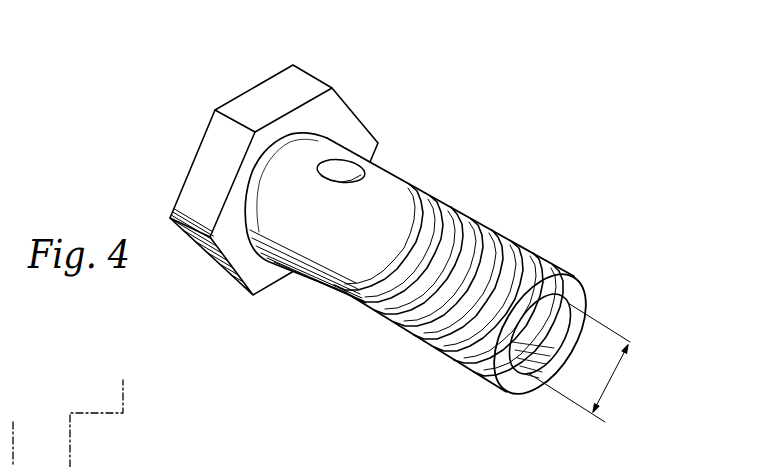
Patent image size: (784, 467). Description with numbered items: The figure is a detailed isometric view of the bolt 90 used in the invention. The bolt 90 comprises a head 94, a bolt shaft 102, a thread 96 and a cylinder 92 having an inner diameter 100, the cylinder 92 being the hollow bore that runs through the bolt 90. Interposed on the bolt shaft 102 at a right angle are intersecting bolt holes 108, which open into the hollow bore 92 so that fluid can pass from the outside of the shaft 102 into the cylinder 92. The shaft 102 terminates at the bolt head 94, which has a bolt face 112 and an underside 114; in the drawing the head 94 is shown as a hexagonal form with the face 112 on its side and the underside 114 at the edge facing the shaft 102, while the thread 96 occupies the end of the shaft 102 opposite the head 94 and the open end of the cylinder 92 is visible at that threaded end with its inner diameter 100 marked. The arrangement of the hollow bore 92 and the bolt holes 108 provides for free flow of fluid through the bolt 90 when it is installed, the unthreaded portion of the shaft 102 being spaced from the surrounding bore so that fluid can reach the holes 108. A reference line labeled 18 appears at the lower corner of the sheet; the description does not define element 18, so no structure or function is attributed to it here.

The bolt 90 is at (342, 346).
The cylinder 92 is at (530, 372).
The head 94 is at (283, 90).
The thread 96 is at (484, 218).
The inner diameter 100 is at (579, 362).
The bolt shaft 102 is at (392, 184).
The bolt holes 108 is at (349, 172).
The bolt face 112 is at (178, 185).
The underside 114 is at (224, 242).
The fuel rail 18 is at (30, 466).